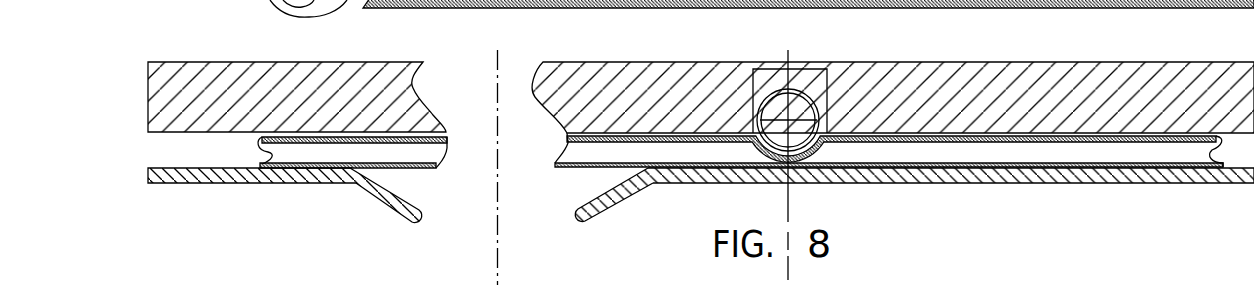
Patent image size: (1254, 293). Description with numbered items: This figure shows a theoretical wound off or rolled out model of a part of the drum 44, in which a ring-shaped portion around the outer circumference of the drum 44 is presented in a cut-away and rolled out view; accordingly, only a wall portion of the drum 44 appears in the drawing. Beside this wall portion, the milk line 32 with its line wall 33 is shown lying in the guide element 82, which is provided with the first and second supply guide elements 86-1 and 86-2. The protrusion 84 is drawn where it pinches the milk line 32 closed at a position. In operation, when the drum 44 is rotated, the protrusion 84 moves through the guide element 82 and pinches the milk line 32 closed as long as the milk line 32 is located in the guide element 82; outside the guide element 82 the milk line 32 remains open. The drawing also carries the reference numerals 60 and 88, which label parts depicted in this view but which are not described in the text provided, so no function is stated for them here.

The drum 44 is at (298, 98).
The milk line 32 is at (299, 153).
The guide element 82 is at (357, 183).
The second supply guide element 86-2 is at (413, 214).
The first supply guide element 86-1 is at (580, 214).
The protrusion 84 is at (788, 120).
The line wall 33 is at (1097, 141).
The upper frame member 60 is at (1253, 33).
The cable 88 is at (282, 8).